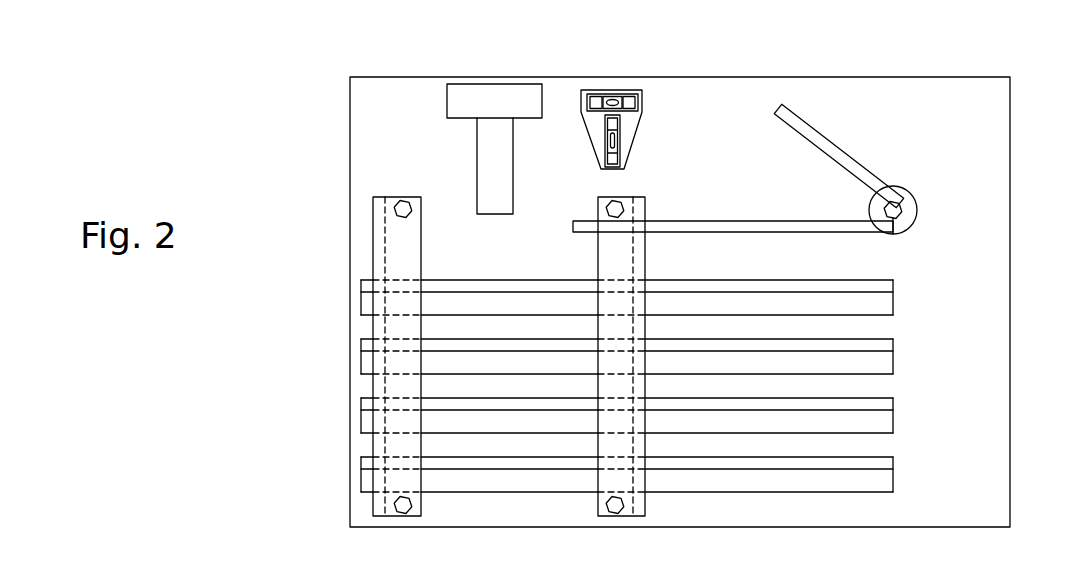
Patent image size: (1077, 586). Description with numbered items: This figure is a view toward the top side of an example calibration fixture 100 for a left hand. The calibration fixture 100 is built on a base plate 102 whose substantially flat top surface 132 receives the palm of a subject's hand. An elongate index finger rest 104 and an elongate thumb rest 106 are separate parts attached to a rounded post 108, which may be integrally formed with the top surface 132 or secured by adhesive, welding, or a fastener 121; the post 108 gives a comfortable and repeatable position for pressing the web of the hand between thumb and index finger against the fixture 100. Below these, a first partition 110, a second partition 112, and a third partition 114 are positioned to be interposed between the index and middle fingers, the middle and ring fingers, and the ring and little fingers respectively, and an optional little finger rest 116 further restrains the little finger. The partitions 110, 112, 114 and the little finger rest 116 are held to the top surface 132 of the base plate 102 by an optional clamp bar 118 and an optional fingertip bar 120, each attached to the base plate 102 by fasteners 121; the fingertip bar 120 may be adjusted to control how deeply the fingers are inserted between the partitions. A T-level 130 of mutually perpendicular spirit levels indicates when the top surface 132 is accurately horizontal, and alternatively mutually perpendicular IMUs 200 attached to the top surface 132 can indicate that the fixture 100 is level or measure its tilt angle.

The calibration fixture 100 is at (278, 78).
The base plate 102 is at (558, 77).
The index finger rest 104 is at (695, 221).
The thumb rest 106 is at (850, 148).
The rounded post 108 is at (869, 206).
The first partition 110 is at (880, 279).
The second partition 112 is at (880, 338).
The third partition 114 is at (880, 397).
The little finger rest 116 is at (880, 456).
The clamp bar 118 is at (392, 197).
The fingertip bar 120 is at (635, 197).
The fastener 121 is at (408, 214).
The T-level 130 is at (640, 125).
The top surface 132 is at (990, 352).
The IMUs 200 is at (447, 92).